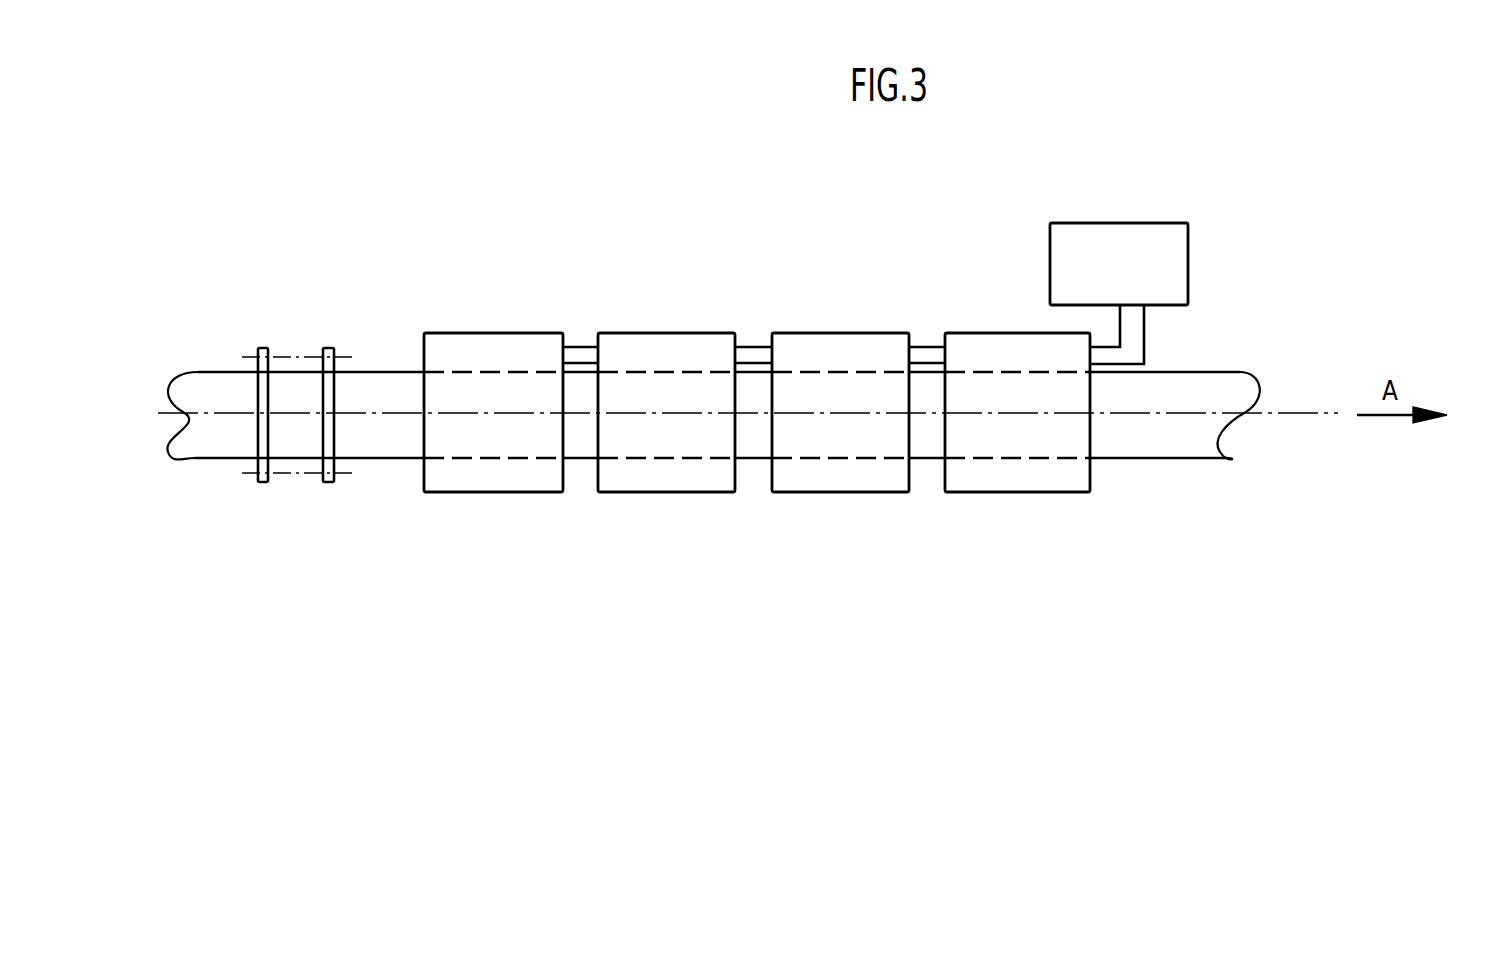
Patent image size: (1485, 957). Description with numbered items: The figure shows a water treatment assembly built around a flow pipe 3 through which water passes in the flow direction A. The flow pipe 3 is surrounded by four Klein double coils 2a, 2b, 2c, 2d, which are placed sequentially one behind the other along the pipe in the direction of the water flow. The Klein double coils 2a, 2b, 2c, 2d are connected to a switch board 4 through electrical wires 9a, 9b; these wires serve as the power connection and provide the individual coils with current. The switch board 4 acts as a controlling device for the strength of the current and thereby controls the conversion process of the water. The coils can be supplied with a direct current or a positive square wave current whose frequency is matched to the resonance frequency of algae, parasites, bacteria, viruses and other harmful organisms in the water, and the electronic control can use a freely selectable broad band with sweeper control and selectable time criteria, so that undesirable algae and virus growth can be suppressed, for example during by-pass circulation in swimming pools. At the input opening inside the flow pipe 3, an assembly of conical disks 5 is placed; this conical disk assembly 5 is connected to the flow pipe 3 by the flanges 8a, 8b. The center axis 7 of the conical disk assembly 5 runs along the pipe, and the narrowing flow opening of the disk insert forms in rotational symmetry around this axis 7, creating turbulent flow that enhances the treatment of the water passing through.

The Klein double coil 2a is at (492, 478).
The Klein double coil 2b is at (680, 475).
The Klein double coil 2c is at (848, 475).
The Klein double coil 2d is at (1048, 473).
The flow pipe 3 is at (1223, 385).
The switch board 4 is at (1152, 267).
The assembly of conical disks 5 is at (287, 357).
The center axis 7 is at (1297, 417).
The flange 8a is at (253, 475).
The flange 8b is at (318, 475).
The electrical wire 9a is at (578, 345).
The electrical wire 9b is at (928, 353).